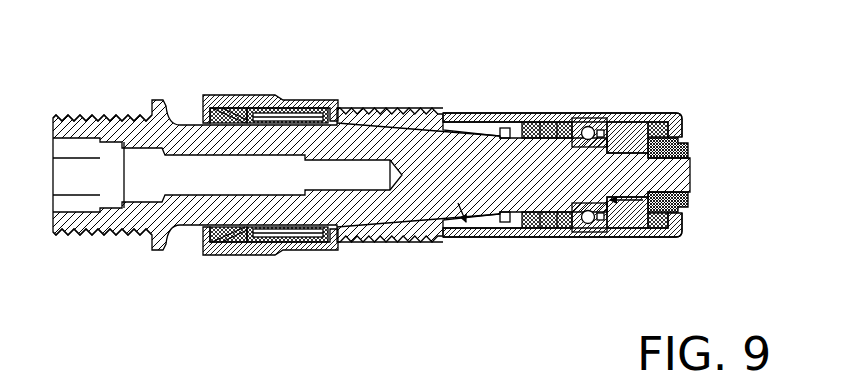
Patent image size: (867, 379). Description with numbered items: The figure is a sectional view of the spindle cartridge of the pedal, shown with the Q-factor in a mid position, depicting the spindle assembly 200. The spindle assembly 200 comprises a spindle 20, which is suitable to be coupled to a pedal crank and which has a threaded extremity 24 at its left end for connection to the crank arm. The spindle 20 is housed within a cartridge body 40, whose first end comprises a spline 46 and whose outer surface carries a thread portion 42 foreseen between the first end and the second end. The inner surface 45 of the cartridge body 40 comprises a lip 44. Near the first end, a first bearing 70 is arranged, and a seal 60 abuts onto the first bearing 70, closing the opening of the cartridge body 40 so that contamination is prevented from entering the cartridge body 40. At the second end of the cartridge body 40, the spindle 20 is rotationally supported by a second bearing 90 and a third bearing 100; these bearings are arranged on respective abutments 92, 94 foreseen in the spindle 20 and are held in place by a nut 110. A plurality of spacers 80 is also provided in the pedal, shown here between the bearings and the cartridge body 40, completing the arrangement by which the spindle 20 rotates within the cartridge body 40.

The spindle 20 is at (195, 226).
The threaded extremity 24 is at (125, 107).
The cartridge body 40 is at (477, 113).
The thread portion 42 is at (402, 108).
The lip 44 is at (517, 230).
The inner surface 45 is at (458, 203).
The spline 46 is at (235, 256).
The seal 60 is at (242, 100).
The first bearing 70 is at (295, 252).
The spacers 80 is at (558, 122).
The second bearing 90 is at (590, 234).
The abutment 92 is at (597, 118).
The abutment 94 is at (690, 210).
The third bearing 100 is at (635, 238).
The nut 110 is at (690, 145).
The spindle assembly 200 is at (696, 115).